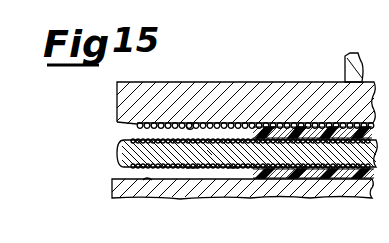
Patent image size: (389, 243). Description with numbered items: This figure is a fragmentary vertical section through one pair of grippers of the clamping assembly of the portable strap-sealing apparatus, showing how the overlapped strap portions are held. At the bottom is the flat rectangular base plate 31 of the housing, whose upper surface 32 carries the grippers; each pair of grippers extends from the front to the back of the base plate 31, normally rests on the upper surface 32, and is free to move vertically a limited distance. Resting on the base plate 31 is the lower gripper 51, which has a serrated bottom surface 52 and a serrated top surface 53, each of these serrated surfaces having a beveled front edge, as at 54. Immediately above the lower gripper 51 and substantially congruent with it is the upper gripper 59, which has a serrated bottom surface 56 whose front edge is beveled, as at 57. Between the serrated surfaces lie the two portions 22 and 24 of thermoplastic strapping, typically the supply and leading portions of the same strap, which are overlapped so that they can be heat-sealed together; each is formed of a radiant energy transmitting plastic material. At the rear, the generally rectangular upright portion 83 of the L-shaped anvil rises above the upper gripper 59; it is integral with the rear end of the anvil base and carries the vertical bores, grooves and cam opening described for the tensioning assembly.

The upper gripper 59 is at (226, 89).
The serrated bottom surface 56 is at (189, 123).
The beveled front edge 57 is at (119, 123).
The upright portion 83 is at (344, 67).
The strap portion 22 is at (286, 129).
The beveled front edge 54 is at (116, 165).
The strap portion 24 is at (296, 181).
The base plate 31 is at (157, 199).
The upper surface 32 is at (143, 180).
The serrated bottom surface 52 is at (192, 170).
The lower gripper 51 is at (212, 155).
The serrated top surface 53 is at (232, 169).